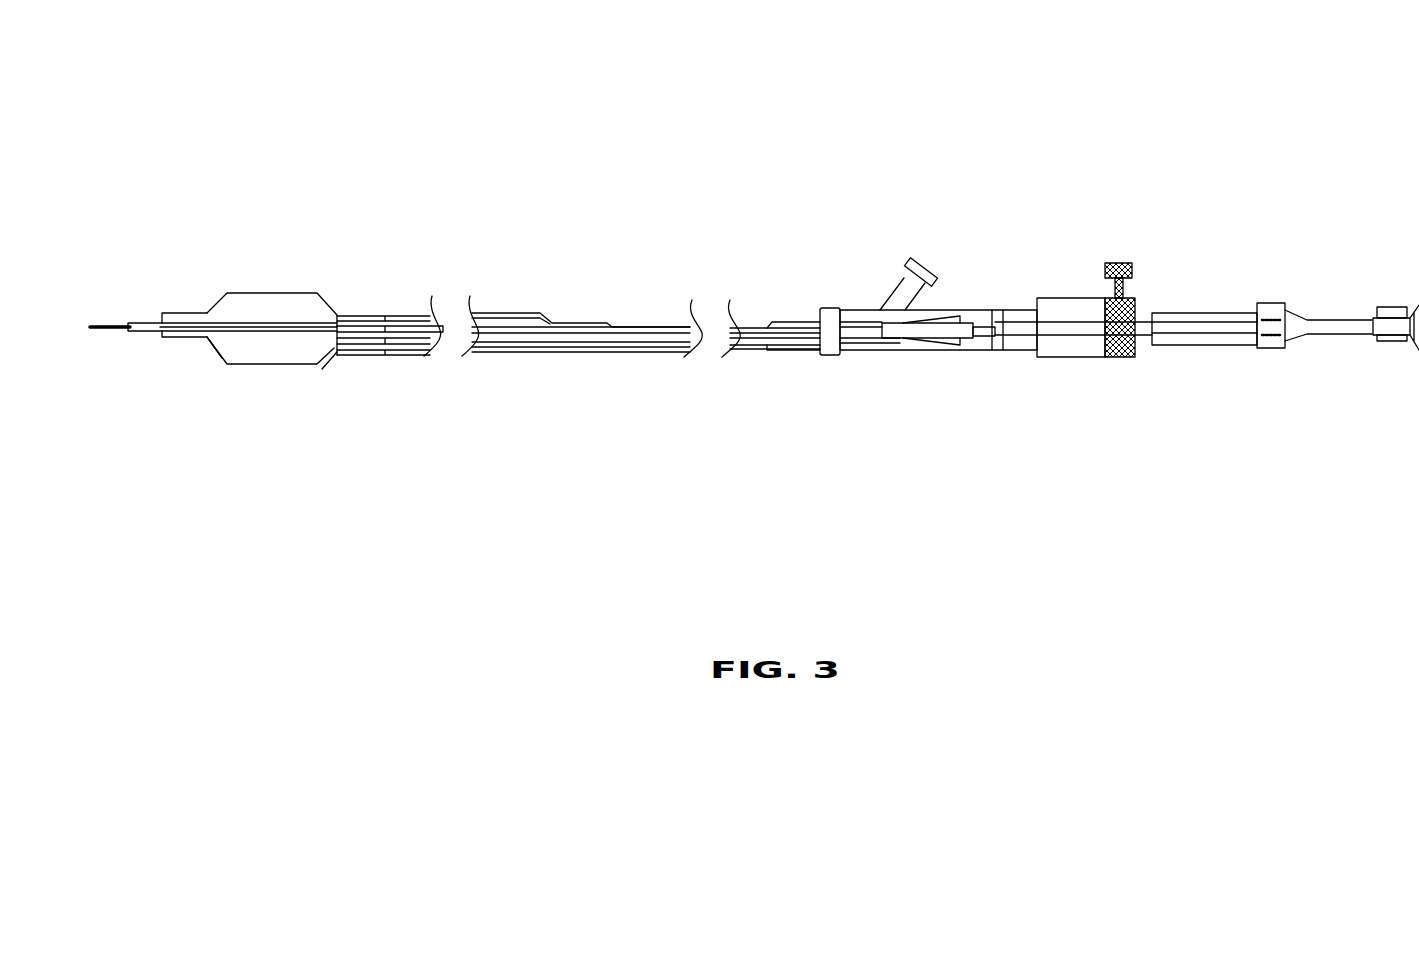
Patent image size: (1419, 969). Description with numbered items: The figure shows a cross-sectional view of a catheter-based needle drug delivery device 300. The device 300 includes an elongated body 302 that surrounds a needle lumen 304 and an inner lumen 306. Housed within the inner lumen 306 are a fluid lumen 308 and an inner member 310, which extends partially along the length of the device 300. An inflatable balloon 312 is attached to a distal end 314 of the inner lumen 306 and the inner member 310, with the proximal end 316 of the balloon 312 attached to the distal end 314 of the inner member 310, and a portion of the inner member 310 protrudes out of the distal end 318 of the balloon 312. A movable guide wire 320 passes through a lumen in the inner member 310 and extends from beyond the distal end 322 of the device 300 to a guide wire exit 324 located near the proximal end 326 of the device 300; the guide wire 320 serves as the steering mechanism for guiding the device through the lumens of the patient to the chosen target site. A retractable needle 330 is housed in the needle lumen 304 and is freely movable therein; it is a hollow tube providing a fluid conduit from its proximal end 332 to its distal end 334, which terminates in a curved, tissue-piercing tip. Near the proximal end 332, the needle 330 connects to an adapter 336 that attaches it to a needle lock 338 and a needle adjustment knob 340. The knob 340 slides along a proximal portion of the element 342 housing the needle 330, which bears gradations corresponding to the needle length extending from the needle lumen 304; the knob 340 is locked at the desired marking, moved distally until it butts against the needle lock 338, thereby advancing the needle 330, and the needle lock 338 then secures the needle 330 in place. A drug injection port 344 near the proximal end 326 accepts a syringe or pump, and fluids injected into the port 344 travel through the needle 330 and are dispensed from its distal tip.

The catheter-based needle drug delivery device 300 is at (556, 324).
The elongated body 302 is at (815, 370).
The needle lumen 304 is at (344, 352).
The inner lumen 306 is at (412, 335).
The fluid lumen 308 is at (347, 355).
The inner member 310 is at (226, 323).
The inflatable balloon 312 is at (265, 293).
The distal end of the inner lumen and inner member 314 is at (403, 342).
The proximal end of the balloon 316 is at (347, 355).
The distal end of the balloon 318 is at (177, 338).
The guide wire 320 is at (100, 327).
The distal end of the device 322 is at (325, 115).
The guide wire exit 324 is at (578, 297).
The proximal end of the device 326 is at (1043, 168).
The retractable needle 330 is at (316, 376).
The proximal end of the needle 332 is at (800, 412).
The distal end of the needle 334 is at (930, 351).
The adapter 336 is at (190, 383).
The needle lock 338 is at (1120, 262).
The needle adjustment knob 340 is at (1227, 313).
The needle lumen element 342 is at (1178, 334).
The drug injection port 344 is at (1388, 341).